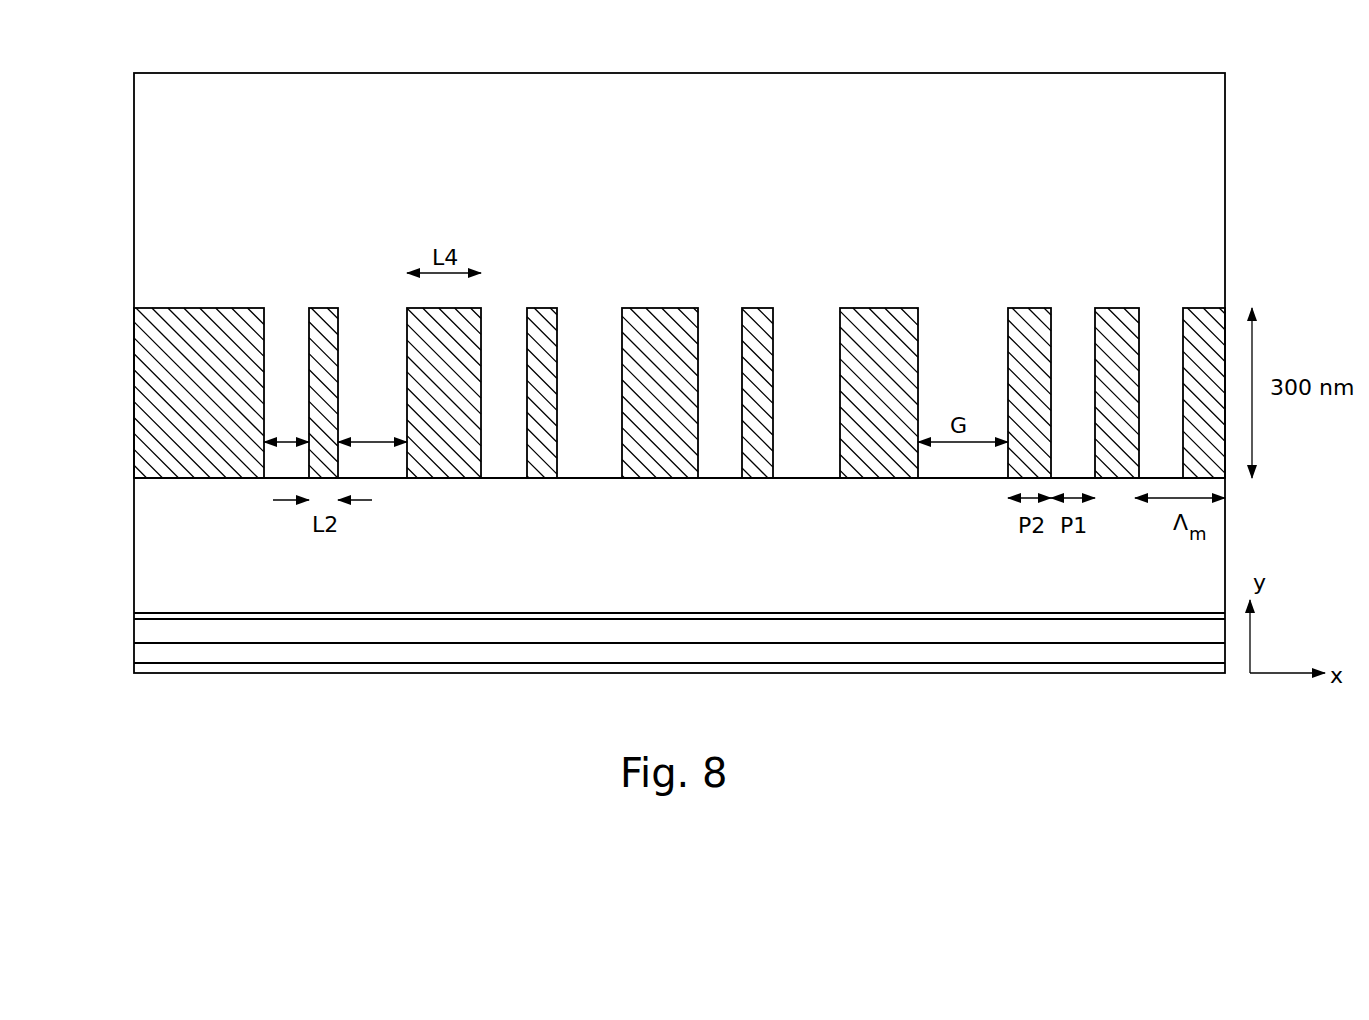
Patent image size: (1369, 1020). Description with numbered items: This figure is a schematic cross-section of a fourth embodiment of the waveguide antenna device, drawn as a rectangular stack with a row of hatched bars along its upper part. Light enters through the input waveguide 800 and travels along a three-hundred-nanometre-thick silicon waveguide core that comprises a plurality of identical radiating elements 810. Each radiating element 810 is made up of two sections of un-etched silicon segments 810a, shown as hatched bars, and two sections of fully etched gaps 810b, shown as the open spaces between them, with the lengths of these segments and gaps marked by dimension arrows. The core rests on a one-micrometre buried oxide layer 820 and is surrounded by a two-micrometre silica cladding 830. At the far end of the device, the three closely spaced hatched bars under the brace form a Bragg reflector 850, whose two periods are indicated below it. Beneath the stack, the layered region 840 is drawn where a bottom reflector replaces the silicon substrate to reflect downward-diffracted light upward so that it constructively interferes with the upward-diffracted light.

The input waveguide 800 is at (680, 373).
The radiating elements 810 is at (679, 295).
The un-etched silicon segments 810a is at (313, 308).
The fully etched gaps 810b is at (285, 400).
The buried oxide layer 820 is at (1225, 518).
The silica cladding 830 is at (1225, 141).
The layer stack 840 is at (134, 643).
The Bragg reflector 850 is at (1225, 245).